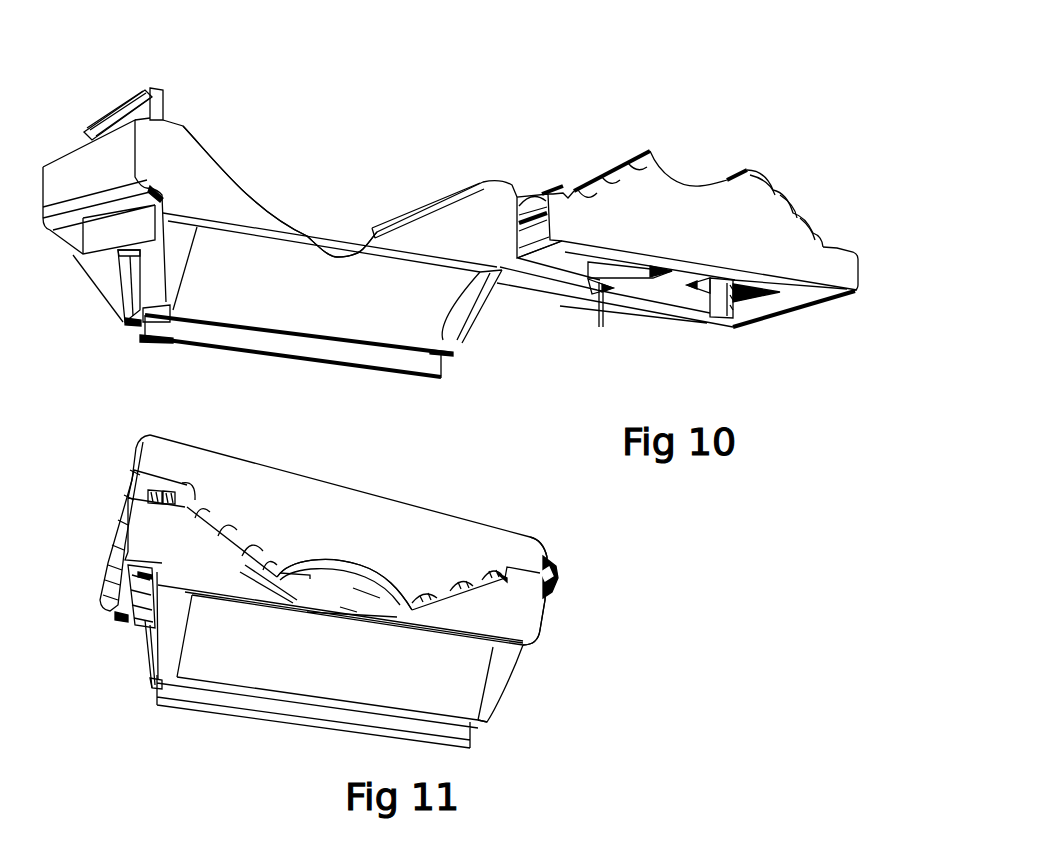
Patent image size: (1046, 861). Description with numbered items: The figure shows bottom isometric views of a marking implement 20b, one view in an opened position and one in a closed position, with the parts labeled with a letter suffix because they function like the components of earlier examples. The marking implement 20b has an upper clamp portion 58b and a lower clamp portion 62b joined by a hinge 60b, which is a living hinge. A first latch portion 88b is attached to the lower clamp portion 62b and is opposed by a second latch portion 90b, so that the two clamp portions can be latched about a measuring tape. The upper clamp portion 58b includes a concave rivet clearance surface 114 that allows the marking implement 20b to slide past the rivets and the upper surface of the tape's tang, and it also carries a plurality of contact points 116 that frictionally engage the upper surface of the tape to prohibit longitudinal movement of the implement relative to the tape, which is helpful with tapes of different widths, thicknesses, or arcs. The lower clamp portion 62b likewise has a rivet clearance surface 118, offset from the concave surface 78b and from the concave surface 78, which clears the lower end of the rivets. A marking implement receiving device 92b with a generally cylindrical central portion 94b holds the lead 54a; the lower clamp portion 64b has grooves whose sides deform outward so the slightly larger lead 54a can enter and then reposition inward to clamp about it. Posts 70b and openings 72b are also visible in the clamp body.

In FIG. 10, the marking implement 20b is at (348, 178).
In FIG. 11, the marking implement 20b is at (447, 497).
In FIG. 10, the lead 54a is at (340, 367).
In FIG. 11, the lead 54a is at (273, 717).
In FIG. 10, the upper clamp portion 58b is at (837, 247).
In FIG. 11, the upper clamp portion 58b is at (530, 537).
In FIG. 10, the hinge 60b is at (527, 192).
In FIG. 11, the hinge 60b is at (558, 573).
In FIG. 10, the lower clamp portion 62b is at (480, 313).
In FIG. 11, the lower clamp portion 62b is at (500, 677).
In FIG. 10, the lower clamp portion 64b is at (126, 80).
In FIG. 10, the post 70b is at (563, 297).
In FIG. 10, the opening 72b is at (643, 297).
In FIG. 11, the concave surface 78 is at (207, 553).
In FIG. 10, the concave surface 78b is at (247, 195).
In FIG. 10, the first latch portion 88b is at (162, 100).
In FIG. 10, the second latch portion 90b is at (807, 303).
In FIG. 10, the marking implement receiving device 92b is at (122, 323).
In FIG. 11, the marking implement receiving device 92b is at (143, 682).
In FIG. 10, the central portion 94b is at (120, 267).
In FIG. 11, the central portion 94b is at (142, 638).
In FIG. 10, the concave rivet clearance surface 114 is at (698, 182).
In FIG. 10, the contact points 116 is at (640, 152).
In FIG. 10, the rivet clearance surface 118 is at (327, 257).